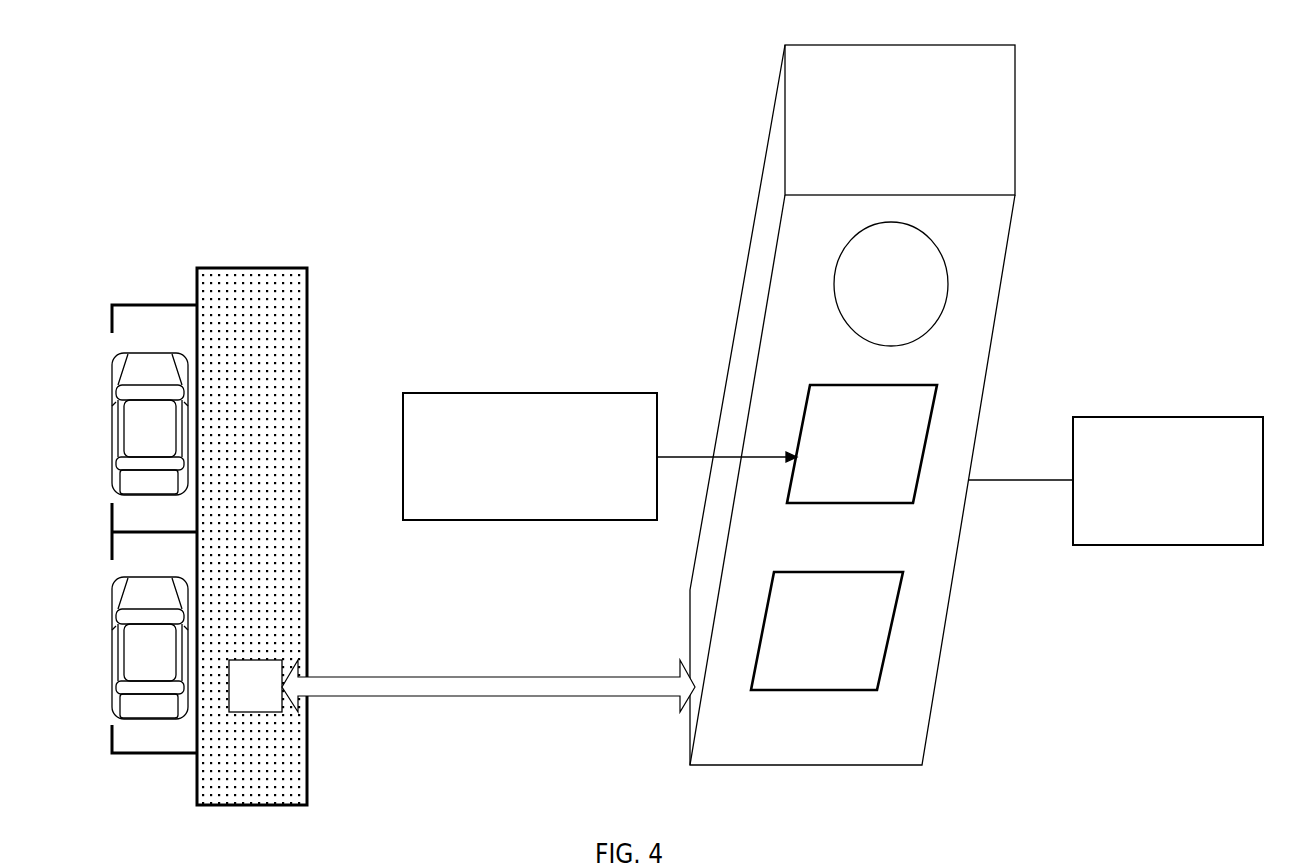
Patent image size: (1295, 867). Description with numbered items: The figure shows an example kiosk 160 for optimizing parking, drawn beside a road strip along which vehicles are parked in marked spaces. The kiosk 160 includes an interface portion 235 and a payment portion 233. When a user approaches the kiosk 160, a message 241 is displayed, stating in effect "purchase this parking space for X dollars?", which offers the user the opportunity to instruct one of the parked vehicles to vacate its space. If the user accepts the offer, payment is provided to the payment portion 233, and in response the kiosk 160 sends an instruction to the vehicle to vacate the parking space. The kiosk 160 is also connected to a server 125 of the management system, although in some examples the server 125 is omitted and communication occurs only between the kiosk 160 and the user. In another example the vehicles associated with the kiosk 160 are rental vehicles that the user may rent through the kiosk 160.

The kiosk 160 is at (932, 44).
The interface portion 235 is at (835, 385).
The payment portion 233 is at (795, 573).
The purchase prompt message 241 is at (460, 393).
The server 125 is at (1168, 481).